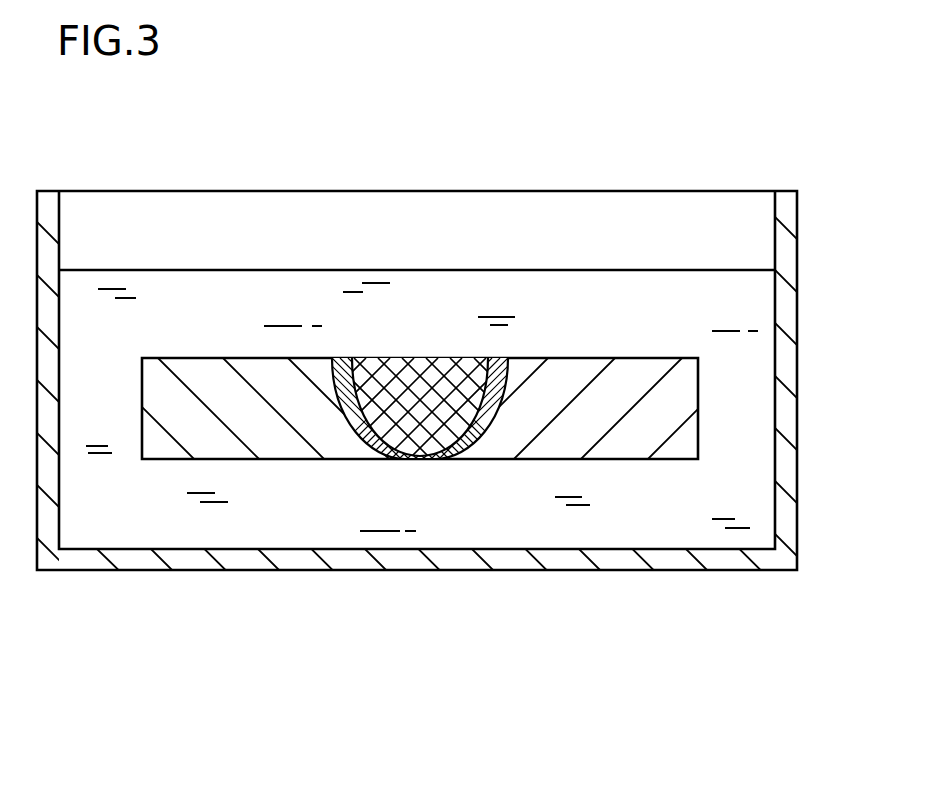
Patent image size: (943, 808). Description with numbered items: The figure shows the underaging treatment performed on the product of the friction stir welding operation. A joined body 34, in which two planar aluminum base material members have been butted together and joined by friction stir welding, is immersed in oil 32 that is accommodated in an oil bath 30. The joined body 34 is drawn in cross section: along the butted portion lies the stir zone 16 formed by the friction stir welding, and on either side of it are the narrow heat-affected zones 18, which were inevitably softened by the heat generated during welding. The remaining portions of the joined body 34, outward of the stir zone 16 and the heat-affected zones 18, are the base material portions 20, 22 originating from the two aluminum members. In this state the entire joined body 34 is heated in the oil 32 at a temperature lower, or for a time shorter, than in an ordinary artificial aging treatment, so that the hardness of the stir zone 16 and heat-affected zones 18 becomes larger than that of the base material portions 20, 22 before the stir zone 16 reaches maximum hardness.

The oil bath 30 is at (360, 572).
The oil 32 is at (188, 315).
The joined body 34 is at (572, 342).
The base material portion 20 is at (273, 440).
The base material portion 22 is at (622, 447).
The stir zone 16 is at (417, 397).
The heat-affected zone 18 is at (467, 435).